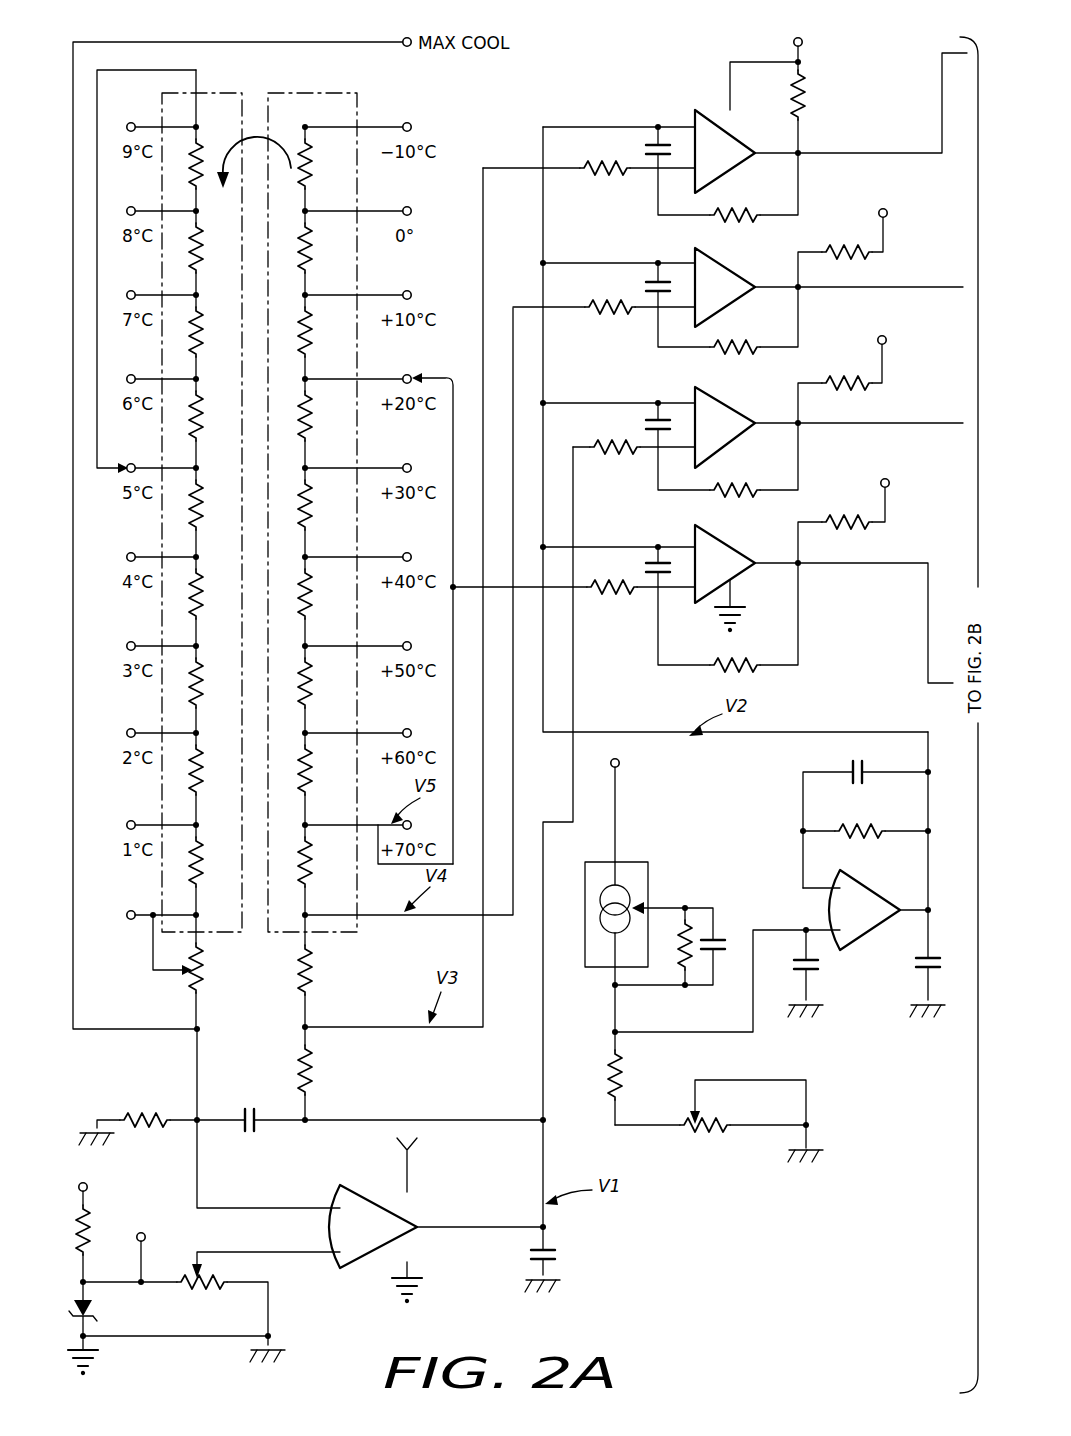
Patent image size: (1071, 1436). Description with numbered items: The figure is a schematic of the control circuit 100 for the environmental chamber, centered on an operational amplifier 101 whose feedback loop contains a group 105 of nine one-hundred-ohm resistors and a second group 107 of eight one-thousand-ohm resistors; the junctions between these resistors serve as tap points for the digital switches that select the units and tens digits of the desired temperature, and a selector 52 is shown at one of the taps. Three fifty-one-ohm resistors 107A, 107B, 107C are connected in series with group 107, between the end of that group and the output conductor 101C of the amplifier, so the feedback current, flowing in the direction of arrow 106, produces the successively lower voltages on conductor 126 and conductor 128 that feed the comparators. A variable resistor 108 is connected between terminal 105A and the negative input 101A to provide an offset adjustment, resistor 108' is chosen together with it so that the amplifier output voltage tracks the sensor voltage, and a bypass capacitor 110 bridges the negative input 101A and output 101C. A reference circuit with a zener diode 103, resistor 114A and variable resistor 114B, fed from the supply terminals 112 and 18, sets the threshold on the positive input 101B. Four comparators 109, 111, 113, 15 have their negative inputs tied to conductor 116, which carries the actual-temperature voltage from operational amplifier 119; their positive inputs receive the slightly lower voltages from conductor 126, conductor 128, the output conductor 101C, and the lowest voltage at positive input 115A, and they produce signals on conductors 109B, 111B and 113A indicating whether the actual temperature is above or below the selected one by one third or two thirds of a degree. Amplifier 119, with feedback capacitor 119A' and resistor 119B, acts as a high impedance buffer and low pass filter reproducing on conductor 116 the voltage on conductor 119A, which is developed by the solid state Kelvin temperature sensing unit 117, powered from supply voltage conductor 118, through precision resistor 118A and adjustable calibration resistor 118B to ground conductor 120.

The circuit 100 is at (683, 1245).
The temperature selector switch 52 is at (434, 366).
The operational amplifier 101 is at (364, 1270).
The negative input 101A is at (198, 1192).
The positive input 101B is at (298, 1260).
The output conductor 101C is at (478, 1226).
The zener diode 103 is at (97, 1309).
The group of resistors 105 is at (240, 932).
The terminal 105A is at (135, 910).
The arrow 106 is at (258, 134).
The second group of resistors 107 is at (282, 938).
The 51 ohm resistor 107A is at (312, 862).
The 51 ohm resistor 107B is at (304, 985).
The 51 ohm resistor 107C is at (335, 1075).
The variable resistor 108 is at (199, 973).
The resistor 108' is at (138, 1111).
The bypass capacitor 110 is at (260, 1127).
The +8.5V supply terminal 112 is at (794, 43).
The resistor 114A is at (87, 1226).
The variable resistor 114B is at (198, 1283).
The +6.9V reference terminal 18 is at (146, 1238).
The comparator 109 is at (728, 120).
The conductor 109B is at (842, 150).
The comparator 111 is at (740, 273).
The conductor 111B is at (862, 290).
The comparator 113 is at (748, 407).
The conductor 113A is at (858, 425).
The comparator 15 is at (740, 548).
The positive input 115A is at (840, 566).
The conductor 116 is at (598, 732).
The solid state Kelvin temperature sensing unit 117 is at (654, 880).
The supply voltage conductor 118 is at (618, 770).
The precision resistor 118A is at (621, 1060).
The precision adjustable resistor 118B is at (705, 1130).
The operational amplifier 119 is at (864, 945).
The conductor 119A is at (712, 979).
The capacitor 119A' is at (867, 821).
The resistor 119B is at (855, 830).
The ground conductor 120 is at (812, 1149).
The conductor 126 is at (485, 951).
The conductor 128 is at (406, 918).